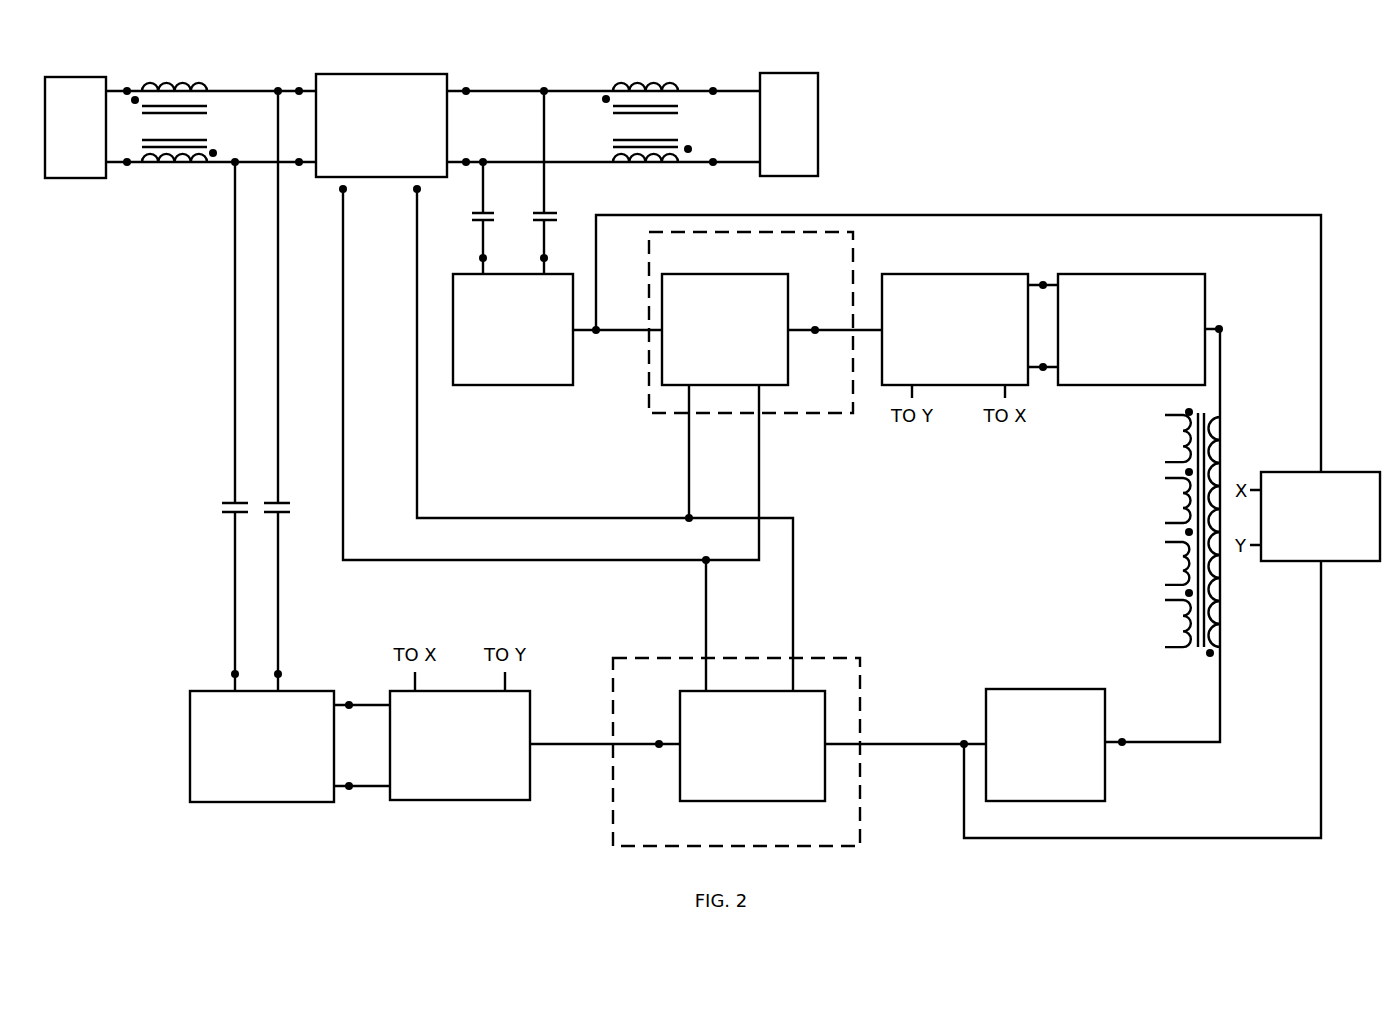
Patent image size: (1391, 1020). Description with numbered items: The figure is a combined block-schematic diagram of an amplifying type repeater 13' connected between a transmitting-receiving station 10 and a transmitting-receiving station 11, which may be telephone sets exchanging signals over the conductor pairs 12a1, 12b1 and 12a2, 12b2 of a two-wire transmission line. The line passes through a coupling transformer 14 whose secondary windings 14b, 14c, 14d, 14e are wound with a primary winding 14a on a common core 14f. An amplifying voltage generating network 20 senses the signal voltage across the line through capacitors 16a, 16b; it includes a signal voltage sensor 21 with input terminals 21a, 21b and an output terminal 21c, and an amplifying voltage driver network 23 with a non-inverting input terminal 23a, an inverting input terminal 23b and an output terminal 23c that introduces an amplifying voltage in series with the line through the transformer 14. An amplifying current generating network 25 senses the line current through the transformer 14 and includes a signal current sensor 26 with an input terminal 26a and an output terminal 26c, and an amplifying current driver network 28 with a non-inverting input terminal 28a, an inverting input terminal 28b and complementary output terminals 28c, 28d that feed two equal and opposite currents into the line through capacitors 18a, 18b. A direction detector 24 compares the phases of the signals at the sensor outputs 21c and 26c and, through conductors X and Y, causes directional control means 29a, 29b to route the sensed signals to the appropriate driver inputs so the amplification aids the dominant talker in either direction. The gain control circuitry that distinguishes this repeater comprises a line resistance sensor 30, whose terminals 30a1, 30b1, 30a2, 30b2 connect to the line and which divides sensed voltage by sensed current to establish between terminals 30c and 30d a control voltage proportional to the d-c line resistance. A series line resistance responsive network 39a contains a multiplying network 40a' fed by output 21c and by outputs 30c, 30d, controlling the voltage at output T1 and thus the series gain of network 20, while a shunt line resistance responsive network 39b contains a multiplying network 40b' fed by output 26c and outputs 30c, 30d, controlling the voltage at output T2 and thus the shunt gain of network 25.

The transmitting-receiving station 10 is at (75, 127).
The transmitting-receiving station 11 is at (789, 124).
The conductor 12a1 is at (120, 88).
The conductor 12b1 is at (112, 166).
The conductor 12a2 is at (730, 88).
The conductor 12b2 is at (736, 166).
The amplifying type repeater 13' is at (1185, 147).
The coupling transformer 14 is at (190, 215).
The primary winding 14a is at (1225, 588).
The secondary winding 14b is at (186, 90).
The secondary winding 14c is at (644, 84).
The secondary winding 14d is at (176, 165).
The secondary winding 14e is at (656, 168).
The common core 14f is at (1194, 648).
The capacitor 16a is at (533, 217).
The capacitor 16b is at (472, 217).
The capacitor 18a is at (288, 504).
The capacitor 18b is at (222, 505).
The amplifying voltage generating network 20 is at (1037, 203).
The signal voltage sensor 21 is at (520, 385).
The input terminal 21a is at (540, 258).
The input terminal 21b is at (480, 258).
The output terminal 21c is at (599, 326).
The amplifying voltage driver network 23 is at (1140, 274).
The non-inverting input terminal 23a is at (1043, 282).
The inverting input terminal 23b is at (1043, 370).
The output terminal 23c is at (1220, 327).
The direction detector 24 is at (1345, 472).
The amplifying current generating network 25 is at (324, 823).
The signal current sensor 26 is at (1039, 689).
The input terminal 26a is at (1124, 746).
The output terminal 26c is at (962, 738).
The amplifying current driver network 28 is at (248, 804).
The non-inverting input terminal 28a is at (351, 700).
The inverting input terminal 28b is at (351, 792).
The complementary output terminal 28c is at (283, 673).
The complementary output terminal 28d is at (232, 672).
The directional control means 29a is at (950, 274).
The directional control means 29b is at (466, 800).
The line resistance sensor 30 is at (389, 74).
The line resistance sensor terminal 30a1 is at (296, 87).
The line resistance sensor terminal 30b1 is at (302, 166).
The line resistance sensor terminal 30a2 is at (467, 87).
The line resistance sensor terminal 30b2 is at (467, 159).
The output terminal 30c is at (346, 191).
The output terminal 30d is at (419, 189).
The series line resistance responsive network 39a is at (804, 413).
The shunt line resistance responsive network 39b is at (825, 657).
The multiplying network 40a' is at (730, 313).
The multiplying network 40b' is at (752, 764).
The output T1 is at (817, 323).
The output T2 is at (657, 751).